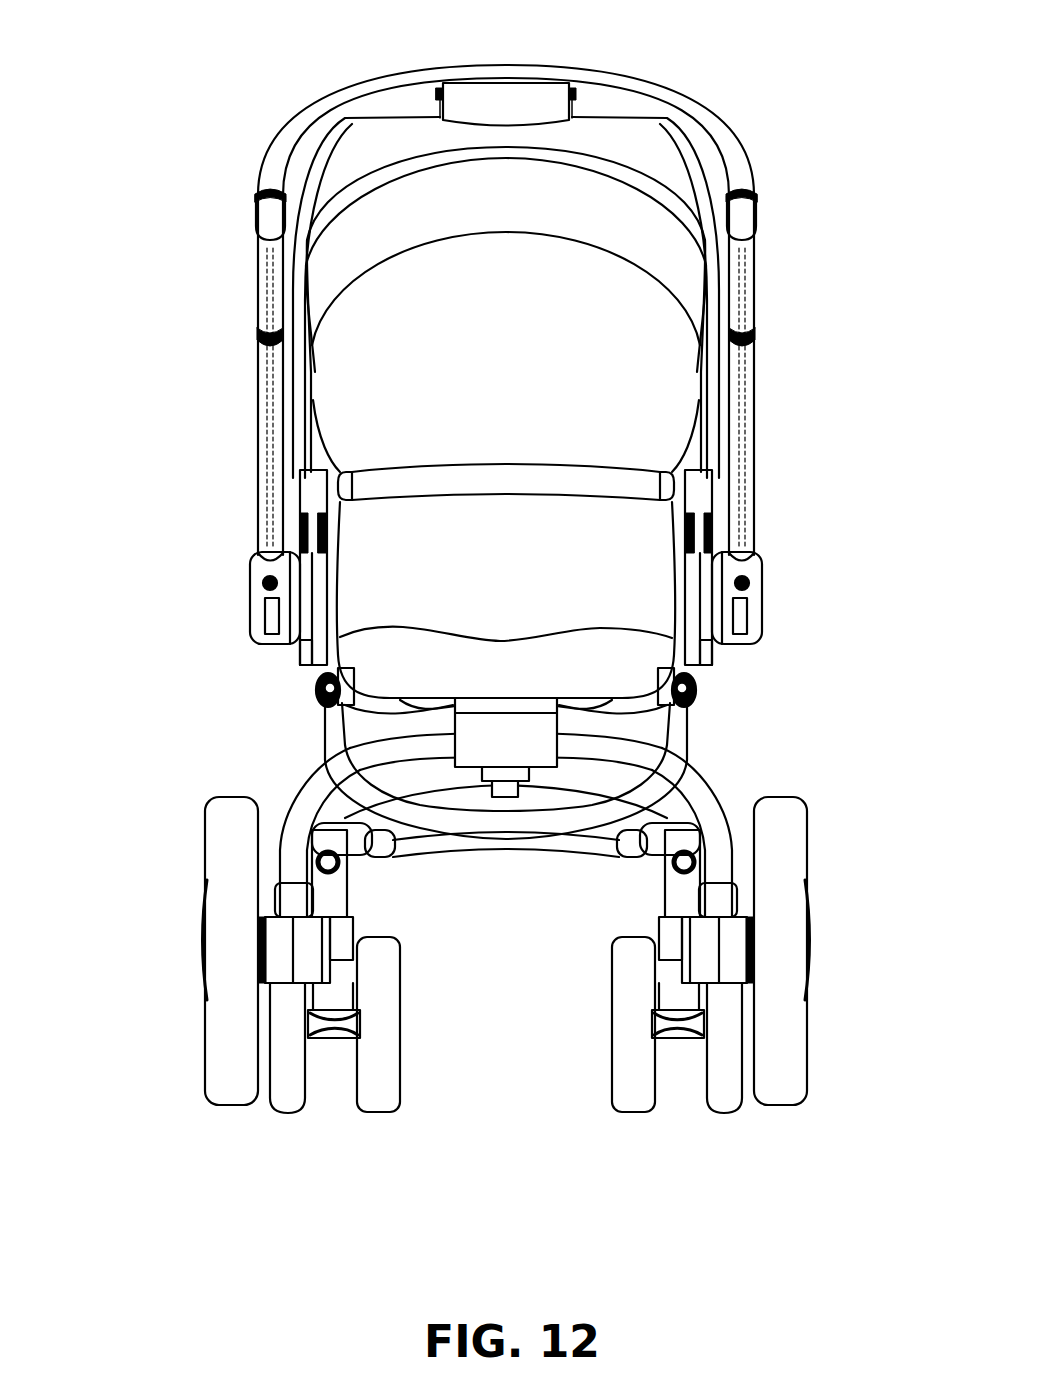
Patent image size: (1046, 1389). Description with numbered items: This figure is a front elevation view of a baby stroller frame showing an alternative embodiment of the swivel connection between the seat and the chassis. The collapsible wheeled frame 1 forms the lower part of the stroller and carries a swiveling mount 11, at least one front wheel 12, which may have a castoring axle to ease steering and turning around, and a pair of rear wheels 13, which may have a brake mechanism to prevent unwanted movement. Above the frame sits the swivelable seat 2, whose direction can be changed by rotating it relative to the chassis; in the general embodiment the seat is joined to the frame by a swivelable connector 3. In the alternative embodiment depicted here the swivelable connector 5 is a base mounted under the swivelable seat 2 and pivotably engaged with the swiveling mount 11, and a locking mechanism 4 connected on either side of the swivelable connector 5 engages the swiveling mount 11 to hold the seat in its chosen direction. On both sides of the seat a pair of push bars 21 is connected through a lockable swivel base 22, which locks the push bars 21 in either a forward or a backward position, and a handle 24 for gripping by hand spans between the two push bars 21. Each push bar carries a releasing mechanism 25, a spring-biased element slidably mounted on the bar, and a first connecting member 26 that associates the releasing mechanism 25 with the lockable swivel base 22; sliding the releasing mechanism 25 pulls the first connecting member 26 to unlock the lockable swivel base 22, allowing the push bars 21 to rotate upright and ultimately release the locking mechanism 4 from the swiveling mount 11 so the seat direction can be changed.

The collapsible wheeled frame 1 is at (150, 815).
The swivelable seat 2 is at (158, 295).
The swivelable connector 3 is at (242, 730).
The locking mechanism 4 is at (443, 705).
The swivelable connector 5 is at (505, 705).
The swiveling mount 11 is at (500, 735).
The front wheel 12 is at (613, 1022).
The rear wheels 13 is at (803, 850).
The push bars 21 is at (262, 478).
The lockable swivel base 22 is at (250, 600).
The handle grip 24 is at (508, 88).
The releasing mechanism 25 is at (262, 218).
The first connecting member 26 is at (262, 377).